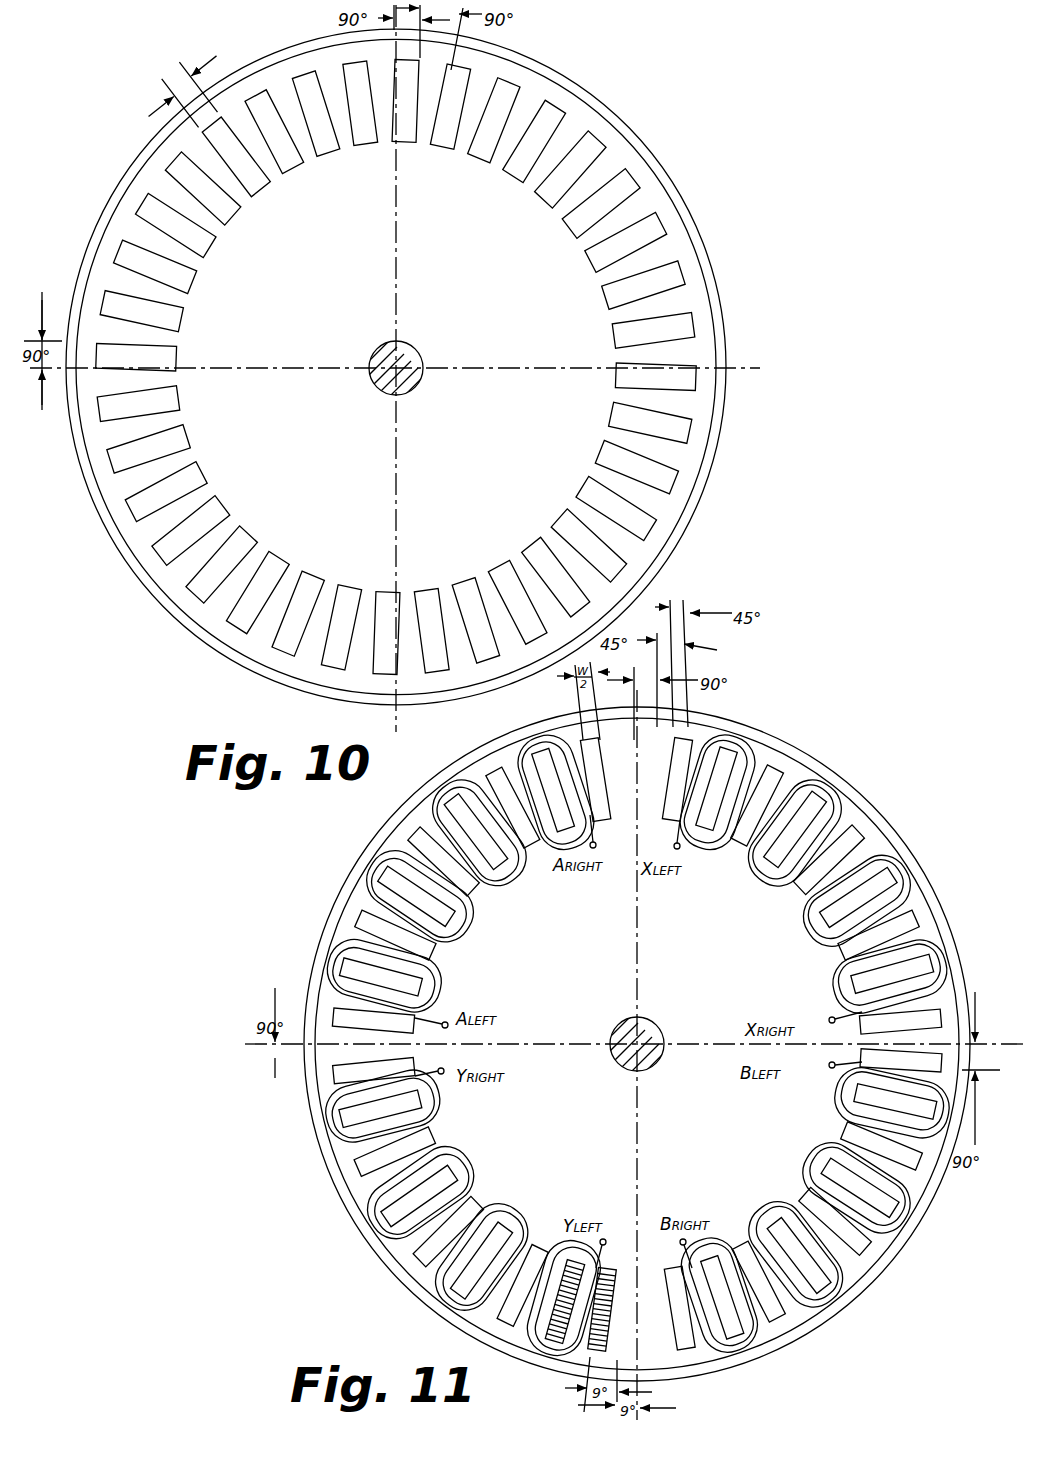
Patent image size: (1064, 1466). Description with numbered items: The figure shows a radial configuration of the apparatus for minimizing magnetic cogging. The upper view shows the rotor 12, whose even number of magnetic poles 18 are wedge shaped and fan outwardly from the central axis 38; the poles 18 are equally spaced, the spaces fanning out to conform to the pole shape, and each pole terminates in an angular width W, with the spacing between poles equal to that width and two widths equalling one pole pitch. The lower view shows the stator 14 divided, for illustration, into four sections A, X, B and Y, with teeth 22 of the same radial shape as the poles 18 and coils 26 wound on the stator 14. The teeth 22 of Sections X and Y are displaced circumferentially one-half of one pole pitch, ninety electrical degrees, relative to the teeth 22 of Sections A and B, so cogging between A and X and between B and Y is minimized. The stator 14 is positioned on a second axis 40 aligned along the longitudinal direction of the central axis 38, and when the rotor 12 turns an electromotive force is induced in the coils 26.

In FIG. 10, the rotor 12 is at (646, 120).
In FIG. 10, the magnetic poles 18 is at (355, 62).
In FIG. 10, the central axis 38 is at (378, 352).
In FIG. 11, the stator 14 is at (855, 770).
In FIG. 11, the teeth 22 is at (590, 742).
In FIG. 11, the coils 26 is at (468, 805).
In FIG. 11, the second axis 40 is at (616, 1020).